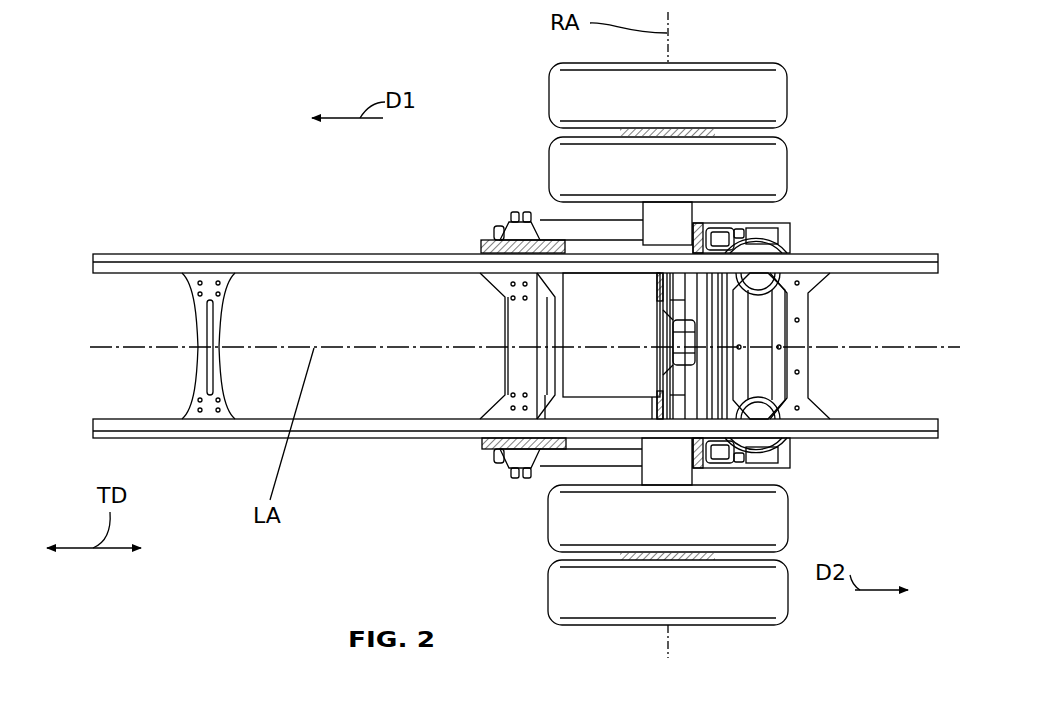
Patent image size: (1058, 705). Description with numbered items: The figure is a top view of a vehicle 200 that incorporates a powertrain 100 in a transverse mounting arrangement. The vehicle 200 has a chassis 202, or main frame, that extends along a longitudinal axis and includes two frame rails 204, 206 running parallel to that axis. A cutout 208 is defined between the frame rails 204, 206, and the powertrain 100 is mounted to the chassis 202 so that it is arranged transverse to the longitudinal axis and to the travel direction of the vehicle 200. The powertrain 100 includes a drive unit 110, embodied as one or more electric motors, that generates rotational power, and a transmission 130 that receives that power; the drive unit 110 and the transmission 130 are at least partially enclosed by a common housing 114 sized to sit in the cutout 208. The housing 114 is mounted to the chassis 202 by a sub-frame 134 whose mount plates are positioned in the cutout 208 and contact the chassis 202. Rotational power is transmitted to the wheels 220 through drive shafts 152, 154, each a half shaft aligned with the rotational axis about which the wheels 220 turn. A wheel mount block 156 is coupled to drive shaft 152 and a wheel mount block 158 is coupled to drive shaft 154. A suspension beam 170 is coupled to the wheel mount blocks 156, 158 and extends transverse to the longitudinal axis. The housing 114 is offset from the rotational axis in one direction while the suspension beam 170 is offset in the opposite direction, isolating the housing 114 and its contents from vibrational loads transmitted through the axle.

The powertrain 100 is at (466, 453).
The drive unit 110 is at (483, 241).
The housing 114 is at (578, 358).
The transmission 130 is at (617, 370).
The sub-frame 134 is at (545, 330).
The drive shaft 152 is at (673, 396).
The drive shaft 154 is at (682, 320).
The wheel mount block 156 is at (692, 487).
The wheel mount block 158 is at (680, 213).
The suspension beam 170 is at (700, 334).
The vehicle 200 is at (838, 50).
The chassis 202 is at (287, 257).
The frame rail 204 is at (228, 257).
The frame rail 206 is at (243, 440).
The cutout 208 is at (598, 295).
The wheels 220 is at (726, 163).